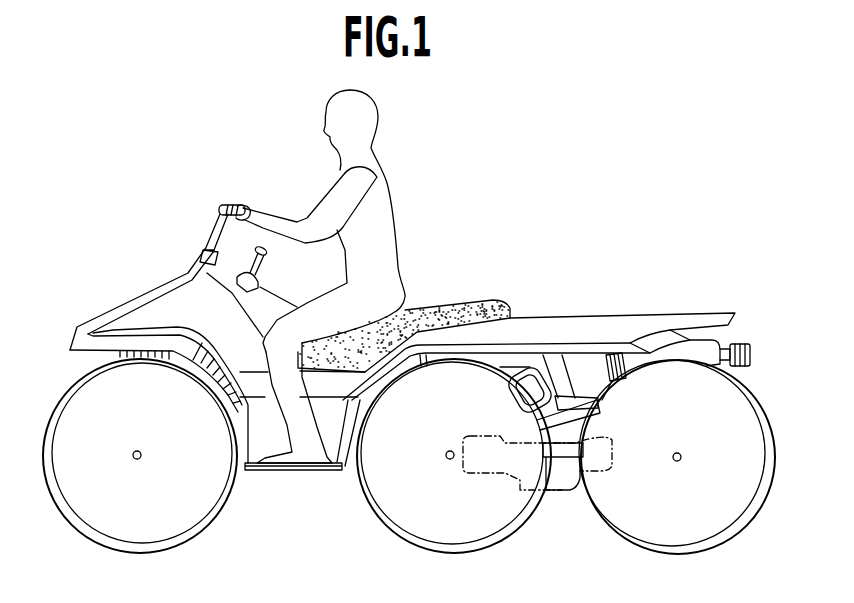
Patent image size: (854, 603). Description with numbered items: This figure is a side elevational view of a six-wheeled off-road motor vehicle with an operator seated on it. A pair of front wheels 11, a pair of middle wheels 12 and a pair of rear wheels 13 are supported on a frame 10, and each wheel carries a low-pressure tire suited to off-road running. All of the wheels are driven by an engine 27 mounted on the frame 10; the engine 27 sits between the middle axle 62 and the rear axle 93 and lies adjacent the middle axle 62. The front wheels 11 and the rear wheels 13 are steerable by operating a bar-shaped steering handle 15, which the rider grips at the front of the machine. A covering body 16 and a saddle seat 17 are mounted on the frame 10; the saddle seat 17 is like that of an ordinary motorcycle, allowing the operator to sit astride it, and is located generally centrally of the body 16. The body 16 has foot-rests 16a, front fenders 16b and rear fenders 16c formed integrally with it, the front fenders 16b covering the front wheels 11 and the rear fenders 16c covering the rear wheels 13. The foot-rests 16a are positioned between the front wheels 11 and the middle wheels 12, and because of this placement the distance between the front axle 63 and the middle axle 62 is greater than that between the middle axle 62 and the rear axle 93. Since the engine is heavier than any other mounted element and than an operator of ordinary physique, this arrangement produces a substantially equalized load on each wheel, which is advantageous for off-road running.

The frame 10 is at (558, 395).
The front wheels 11 is at (207, 517).
The middle wheels 12 is at (497, 527).
The rear wheels 13 is at (638, 532).
The steering handle 15 is at (223, 206).
The covering body 16 is at (648, 306).
The foot-rests 16a is at (325, 472).
The front fenders 16b is at (135, 328).
The rear fenders 16c is at (580, 347).
The saddle seat 17 is at (407, 310).
The engine 27 is at (555, 477).
The middle axle 62 is at (446, 458).
The front axle 63 is at (134, 458).
The rear axle 93 is at (673, 463).